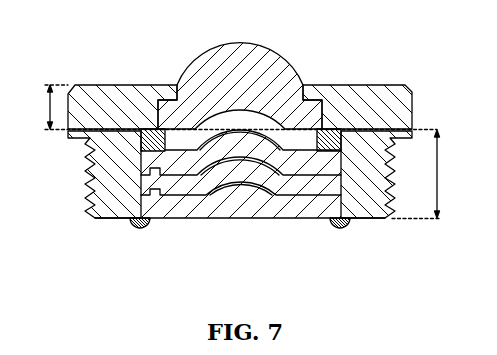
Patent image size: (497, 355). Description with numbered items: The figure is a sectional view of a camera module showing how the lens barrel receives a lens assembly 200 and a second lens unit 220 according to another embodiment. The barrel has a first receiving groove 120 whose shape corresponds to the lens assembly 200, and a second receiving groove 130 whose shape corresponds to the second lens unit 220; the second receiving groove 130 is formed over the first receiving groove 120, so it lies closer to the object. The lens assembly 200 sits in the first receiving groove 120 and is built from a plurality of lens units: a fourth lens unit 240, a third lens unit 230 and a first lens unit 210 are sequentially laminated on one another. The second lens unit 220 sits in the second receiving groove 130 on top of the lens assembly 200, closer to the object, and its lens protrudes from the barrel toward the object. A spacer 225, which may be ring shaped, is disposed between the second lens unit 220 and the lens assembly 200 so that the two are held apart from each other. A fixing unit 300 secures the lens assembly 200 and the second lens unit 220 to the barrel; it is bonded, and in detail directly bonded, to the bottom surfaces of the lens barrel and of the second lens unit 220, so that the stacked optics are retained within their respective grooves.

The lens assembly 200 is at (225, 219).
The second lens unit 220 is at (243, 50).
The spacer 225 is at (328, 130).
The fourth lens unit 240 is at (182, 216).
The first lens unit 210 is at (303, 166).
The third lens unit 230 is at (322, 191).
The fixing unit 300 is at (342, 230).
The second receiving groove 130 is at (232, 107).
The first receiving groove 120 is at (426, 174).